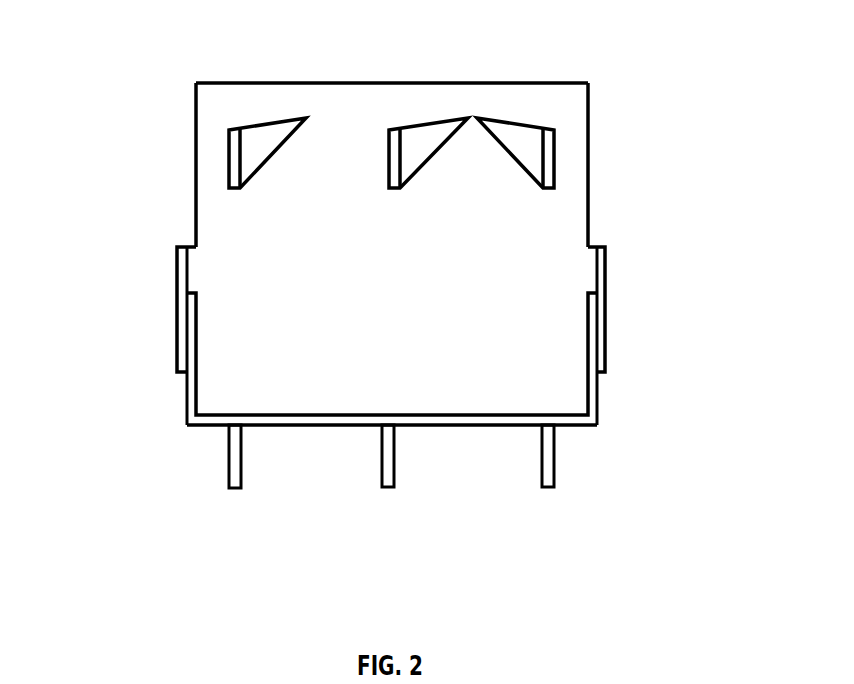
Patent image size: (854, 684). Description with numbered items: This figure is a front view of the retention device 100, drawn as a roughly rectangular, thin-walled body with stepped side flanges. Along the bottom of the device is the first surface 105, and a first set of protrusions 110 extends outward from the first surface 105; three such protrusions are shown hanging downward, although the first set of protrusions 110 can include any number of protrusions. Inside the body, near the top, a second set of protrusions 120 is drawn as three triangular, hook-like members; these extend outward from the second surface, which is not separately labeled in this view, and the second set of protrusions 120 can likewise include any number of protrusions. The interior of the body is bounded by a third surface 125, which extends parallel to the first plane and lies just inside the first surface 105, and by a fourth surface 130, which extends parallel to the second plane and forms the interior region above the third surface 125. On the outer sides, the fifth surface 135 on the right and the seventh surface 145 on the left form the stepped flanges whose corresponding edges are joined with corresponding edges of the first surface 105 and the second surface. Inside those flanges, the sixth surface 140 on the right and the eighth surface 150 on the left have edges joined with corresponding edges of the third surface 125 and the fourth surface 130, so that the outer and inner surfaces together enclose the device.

The retention device 100 is at (392, 361).
The first surface 105 is at (218, 433).
The first set of protrusions 110 is at (550, 496).
The second set of protrusions 120 is at (537, 153).
The third surface 125 is at (318, 413).
The fourth surface 130 is at (392, 166).
The fifth surface 135 is at (597, 393).
The sixth surface 140 is at (590, 269).
The seventh surface 145 is at (185, 393).
The eighth surface 150 is at (198, 273).